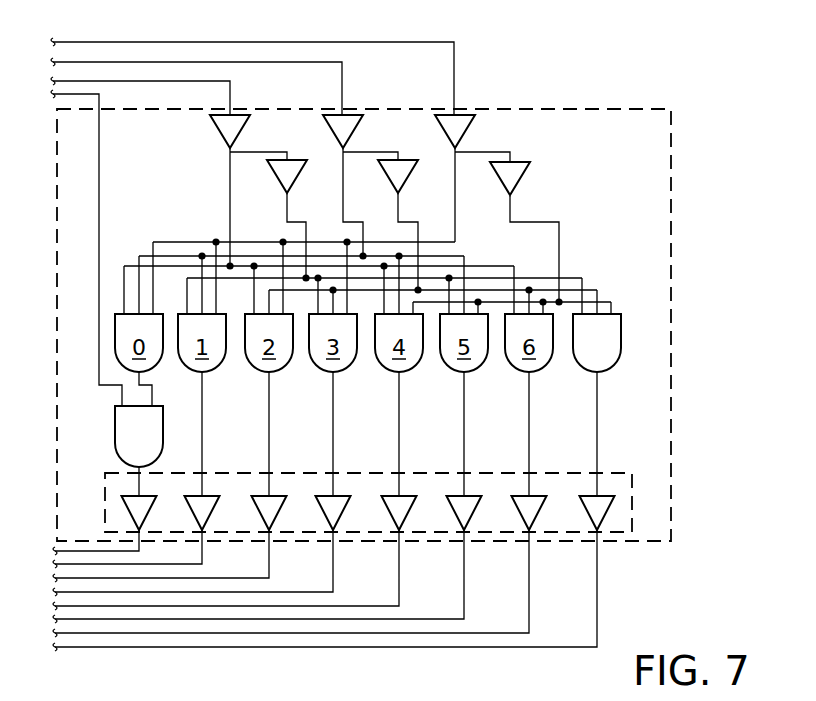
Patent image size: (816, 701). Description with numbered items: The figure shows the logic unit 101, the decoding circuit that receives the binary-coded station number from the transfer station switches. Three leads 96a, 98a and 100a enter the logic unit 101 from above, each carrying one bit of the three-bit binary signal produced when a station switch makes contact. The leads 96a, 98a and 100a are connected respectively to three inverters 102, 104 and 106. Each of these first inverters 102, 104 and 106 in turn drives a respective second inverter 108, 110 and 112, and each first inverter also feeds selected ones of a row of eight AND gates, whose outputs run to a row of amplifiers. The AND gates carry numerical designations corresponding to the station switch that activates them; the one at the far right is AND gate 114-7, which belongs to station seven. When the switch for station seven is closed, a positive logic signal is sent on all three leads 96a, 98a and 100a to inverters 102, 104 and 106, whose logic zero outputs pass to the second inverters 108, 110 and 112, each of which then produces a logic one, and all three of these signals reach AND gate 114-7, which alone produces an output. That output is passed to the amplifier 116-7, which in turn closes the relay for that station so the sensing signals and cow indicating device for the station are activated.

The lead 96a is at (186, 82).
The lead 98a is at (301, 63).
The lead 100a is at (435, 42).
The logic unit 101 is at (671, 203).
The inverter 102 is at (215, 134).
The inverter 104 is at (355, 128).
The inverter 106 is at (473, 128).
The second inverter 108 is at (272, 177).
The second inverter 110 is at (401, 183).
The second inverter 112 is at (524, 180).
The AND gate 114-7 is at (613, 358).
The amplifier 116-7 is at (608, 517).